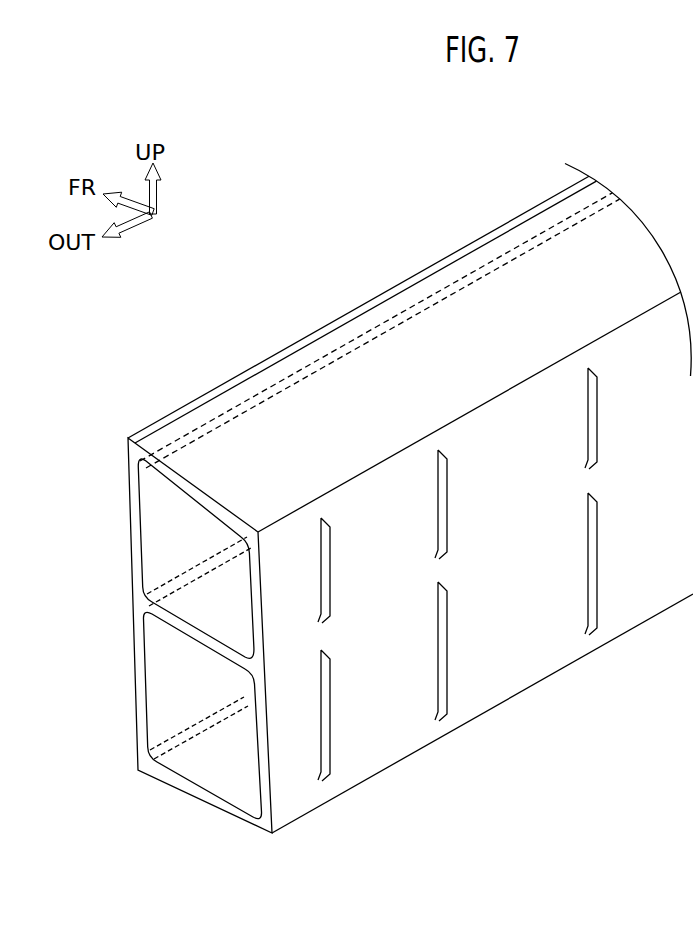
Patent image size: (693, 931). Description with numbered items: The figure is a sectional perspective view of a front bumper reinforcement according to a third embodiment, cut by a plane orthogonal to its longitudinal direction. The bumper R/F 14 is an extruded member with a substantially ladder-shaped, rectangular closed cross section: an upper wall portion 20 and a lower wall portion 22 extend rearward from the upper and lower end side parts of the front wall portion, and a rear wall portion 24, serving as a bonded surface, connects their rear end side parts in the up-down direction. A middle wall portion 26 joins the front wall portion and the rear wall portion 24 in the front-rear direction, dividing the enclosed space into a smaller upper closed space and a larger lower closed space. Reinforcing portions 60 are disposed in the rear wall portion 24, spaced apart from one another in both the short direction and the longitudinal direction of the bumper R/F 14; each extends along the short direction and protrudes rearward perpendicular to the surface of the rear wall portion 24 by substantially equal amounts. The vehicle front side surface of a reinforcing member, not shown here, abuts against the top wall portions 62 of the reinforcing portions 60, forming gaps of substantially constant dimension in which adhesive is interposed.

The bumper R/F 14 is at (228, 353).
The upper wall portion 20 is at (272, 464).
The lower wall portion 22 is at (192, 786).
The rear wall portion 24 is at (385, 480).
The middle wall portion 26 is at (197, 618).
The reinforcing portions 60 is at (490, 574).
The top wall portions 62 is at (330, 572).